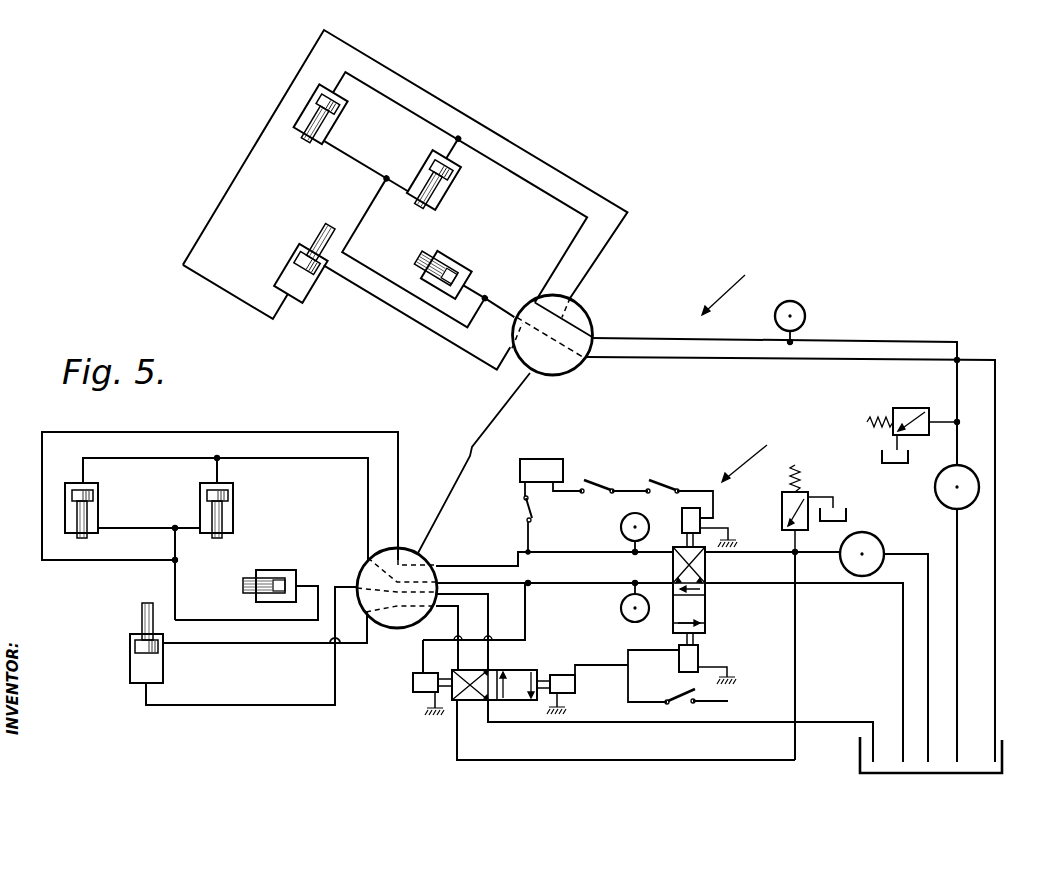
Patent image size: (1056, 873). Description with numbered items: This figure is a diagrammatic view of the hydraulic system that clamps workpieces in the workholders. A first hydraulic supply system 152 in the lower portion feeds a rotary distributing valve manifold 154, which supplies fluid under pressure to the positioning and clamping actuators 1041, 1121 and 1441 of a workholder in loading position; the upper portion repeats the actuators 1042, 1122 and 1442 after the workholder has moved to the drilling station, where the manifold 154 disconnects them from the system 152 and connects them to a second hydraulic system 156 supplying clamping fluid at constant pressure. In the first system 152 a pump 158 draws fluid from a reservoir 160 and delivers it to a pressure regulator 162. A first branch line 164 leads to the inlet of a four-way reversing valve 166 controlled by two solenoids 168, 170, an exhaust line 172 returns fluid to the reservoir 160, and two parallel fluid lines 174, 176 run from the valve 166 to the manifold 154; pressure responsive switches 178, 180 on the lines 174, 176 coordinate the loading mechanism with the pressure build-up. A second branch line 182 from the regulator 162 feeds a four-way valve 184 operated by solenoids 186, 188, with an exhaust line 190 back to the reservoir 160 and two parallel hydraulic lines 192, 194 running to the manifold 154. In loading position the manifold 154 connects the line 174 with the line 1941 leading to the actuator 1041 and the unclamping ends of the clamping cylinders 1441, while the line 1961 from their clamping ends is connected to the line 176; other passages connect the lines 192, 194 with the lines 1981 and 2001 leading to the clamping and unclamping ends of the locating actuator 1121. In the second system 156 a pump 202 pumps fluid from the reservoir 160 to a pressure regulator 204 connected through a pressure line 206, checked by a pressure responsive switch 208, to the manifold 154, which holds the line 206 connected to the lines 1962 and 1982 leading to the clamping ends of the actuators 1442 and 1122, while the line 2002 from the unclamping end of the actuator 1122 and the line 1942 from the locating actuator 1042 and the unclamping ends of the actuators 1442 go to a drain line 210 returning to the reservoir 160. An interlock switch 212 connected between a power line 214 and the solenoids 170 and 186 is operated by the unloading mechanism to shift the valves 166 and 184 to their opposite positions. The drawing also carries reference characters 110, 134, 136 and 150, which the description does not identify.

The hydraulic positioning actuator 1041 is at (243, 578).
The locating actuator 1042 is at (472, 265).
The switch 110 is at (522, 507).
The locating actuator 1121 is at (163, 667).
The locating actuator 1122 is at (304, 296).
The switch 134 is at (600, 485).
The switch 136 is at (660, 487).
The clamping cylinders 1441 is at (100, 503).
The clamping cylinders 1442 is at (330, 118).
The control unit 150 is at (545, 460).
The first hydraulic supply system 152 is at (744, 457).
The rotary distributing valve manifold 154 is at (594, 324).
The second hydraulic system 156 is at (723, 288).
The pump 158 is at (872, 534).
The reservoir 160 is at (1002, 775).
The pressure regulator 162 is at (800, 495).
The first branch line 164 is at (745, 555).
The four-way reversing valve 166 is at (708, 607).
The solenoid 168 is at (700, 514).
The solenoid 170 is at (700, 655).
The exhaust line 172 is at (833, 583).
The fluid line 174 is at (532, 552).
The fluid line 176 is at (540, 585).
The pressure responsive switch 178 is at (621, 525).
The pressure responsive switch 180 is at (621, 612).
The second branch line 182 is at (797, 683).
The four-way valve 184 is at (500, 672).
The solenoid 186 is at (565, 707).
The solenoid 188 is at (413, 683).
The exhaust line 190 is at (632, 722).
The hydraulic line 192 is at (497, 620).
The hydraulic line 194 is at (444, 606).
The line 1941 is at (139, 588).
The line 1942 is at (358, 232).
The line 1961 is at (277, 458).
The line 1962 is at (507, 168).
The line 1981 is at (208, 705).
The line 1982 is at (485, 122).
The line 2001 is at (280, 643).
The line 2002 is at (408, 314).
The pump 202 is at (968, 487).
The pressure regulator 204 is at (893, 408).
The pressure line 206 is at (895, 342).
The pressure responsive switch 208 is at (803, 306).
The drain line 210 is at (690, 360).
The interlock switch 212 is at (705, 706).
The power line 214 is at (730, 700).